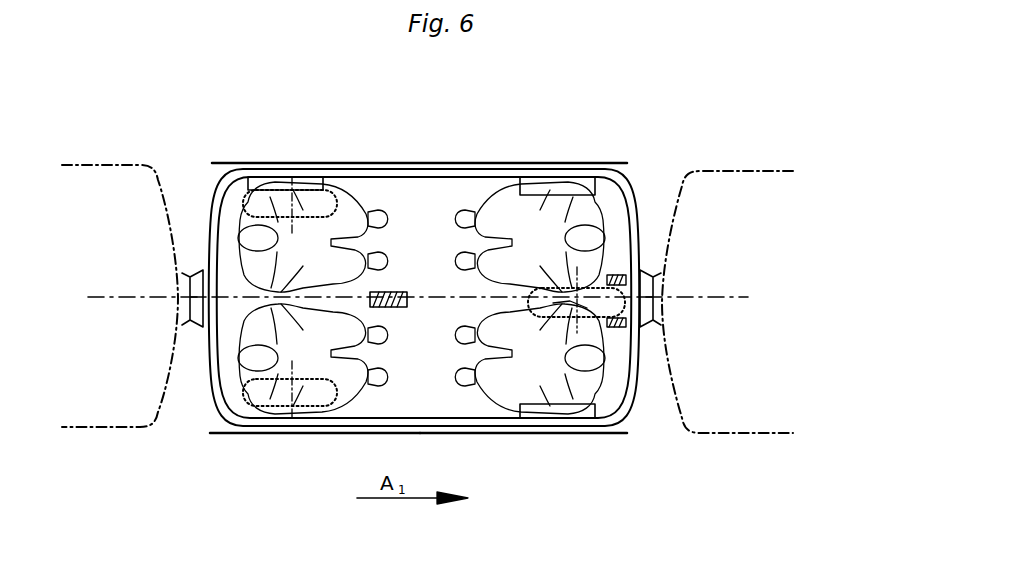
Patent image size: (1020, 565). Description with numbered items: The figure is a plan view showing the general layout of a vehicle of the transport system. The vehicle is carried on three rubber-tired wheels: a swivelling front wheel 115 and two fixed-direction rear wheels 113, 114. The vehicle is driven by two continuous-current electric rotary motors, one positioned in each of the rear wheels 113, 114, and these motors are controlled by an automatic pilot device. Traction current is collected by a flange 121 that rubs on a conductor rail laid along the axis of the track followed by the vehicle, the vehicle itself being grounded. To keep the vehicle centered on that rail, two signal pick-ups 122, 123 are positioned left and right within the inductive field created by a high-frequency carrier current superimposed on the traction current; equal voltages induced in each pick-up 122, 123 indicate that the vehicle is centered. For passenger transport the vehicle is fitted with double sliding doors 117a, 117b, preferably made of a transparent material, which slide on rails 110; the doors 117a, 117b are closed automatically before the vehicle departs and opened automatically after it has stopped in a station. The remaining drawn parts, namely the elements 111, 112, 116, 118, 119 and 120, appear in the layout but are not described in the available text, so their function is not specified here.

The rails 110 is at (434, 169).
The seat support block 111 is at (303, 183).
The seat support block 112 is at (532, 418).
The rear wheel 113 is at (253, 398).
The rear wheel 114 is at (258, 202).
The front wheel 115 is at (546, 299).
The seat support block 116 is at (590, 287).
The sliding door 117a is at (308, 437).
The sliding door 117b is at (583, 445).
The coupling member 118 is at (654, 273).
The coupling member 119 is at (198, 275).
The adjacent vehicle 120 is at (748, 297).
The flange 121 is at (409, 312).
The signal pick-up 122 is at (627, 275).
The signal pick-up 123 is at (620, 330).